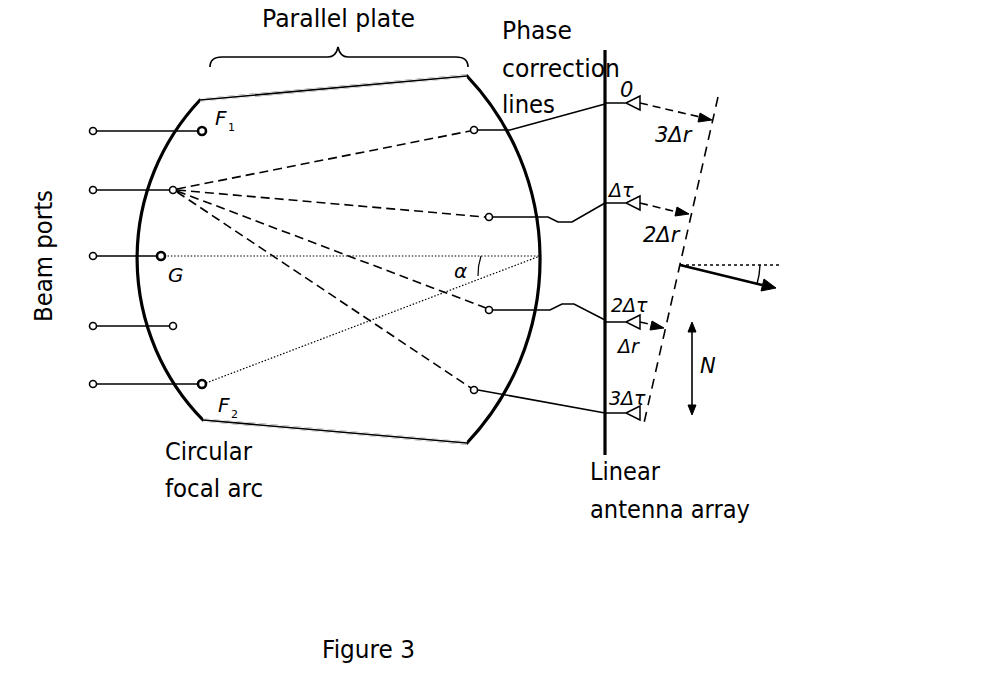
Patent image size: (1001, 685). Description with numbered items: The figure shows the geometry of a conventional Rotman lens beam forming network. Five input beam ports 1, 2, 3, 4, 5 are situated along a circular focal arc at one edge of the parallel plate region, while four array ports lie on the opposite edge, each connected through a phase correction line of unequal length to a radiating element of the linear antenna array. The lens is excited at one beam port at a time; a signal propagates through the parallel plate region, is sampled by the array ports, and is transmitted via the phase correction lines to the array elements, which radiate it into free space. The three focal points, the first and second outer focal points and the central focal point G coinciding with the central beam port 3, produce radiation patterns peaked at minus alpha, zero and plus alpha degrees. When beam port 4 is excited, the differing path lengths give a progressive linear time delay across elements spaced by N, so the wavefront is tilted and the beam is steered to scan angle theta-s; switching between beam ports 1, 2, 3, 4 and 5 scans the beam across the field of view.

The beam port 1 is at (137, 385).
The beam port 2 is at (123, 326).
The beam port 3 is at (117, 256).
The beam port 4 is at (448, 245).
The beam port 5 is at (137, 131).